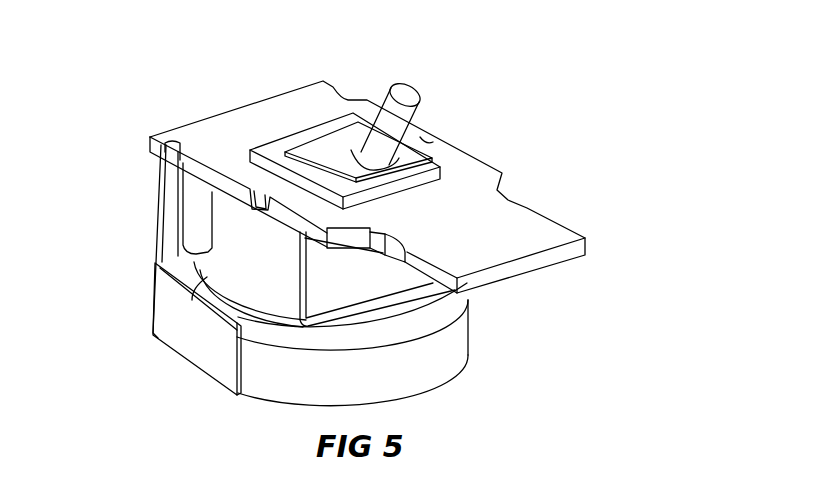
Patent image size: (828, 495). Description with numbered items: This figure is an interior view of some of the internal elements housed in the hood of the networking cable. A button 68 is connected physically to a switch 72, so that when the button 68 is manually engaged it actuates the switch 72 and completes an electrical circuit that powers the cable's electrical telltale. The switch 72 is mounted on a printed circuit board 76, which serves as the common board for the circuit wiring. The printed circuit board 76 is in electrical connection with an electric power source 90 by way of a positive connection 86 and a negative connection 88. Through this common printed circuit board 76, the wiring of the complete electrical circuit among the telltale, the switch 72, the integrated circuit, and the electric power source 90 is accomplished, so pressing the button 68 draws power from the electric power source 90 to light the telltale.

The button 68 is at (413, 82).
The switch 72 is at (452, 153).
The printed circuit board 76 is at (562, 223).
The positive connection 86 is at (232, 249).
The negative connection 88 is at (177, 323).
The electric power source 90 is at (470, 346).